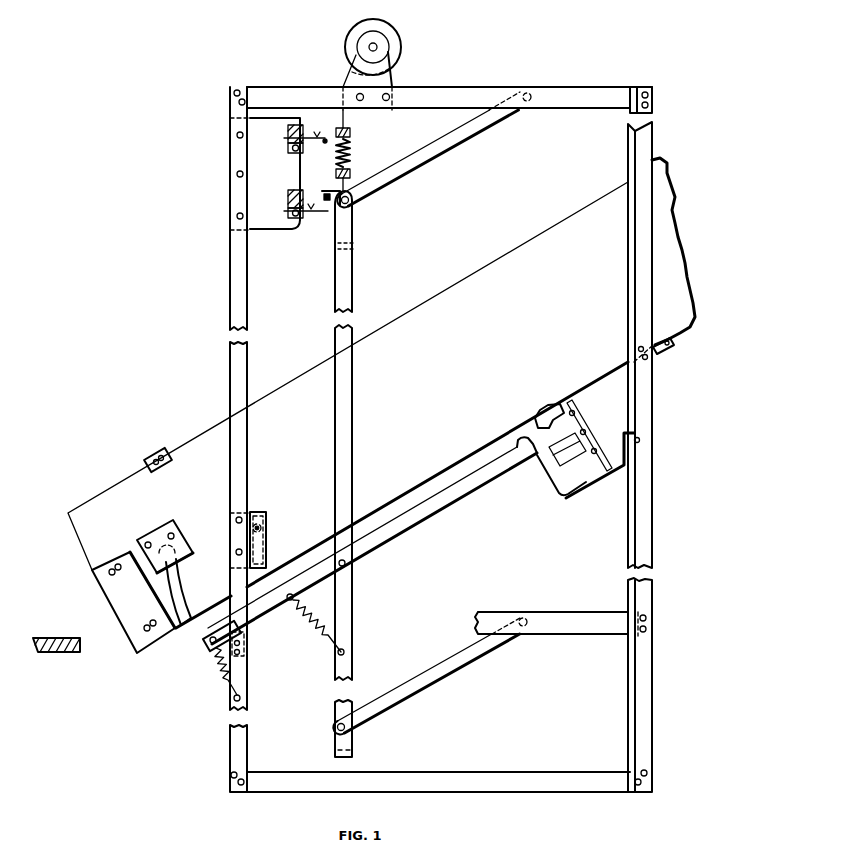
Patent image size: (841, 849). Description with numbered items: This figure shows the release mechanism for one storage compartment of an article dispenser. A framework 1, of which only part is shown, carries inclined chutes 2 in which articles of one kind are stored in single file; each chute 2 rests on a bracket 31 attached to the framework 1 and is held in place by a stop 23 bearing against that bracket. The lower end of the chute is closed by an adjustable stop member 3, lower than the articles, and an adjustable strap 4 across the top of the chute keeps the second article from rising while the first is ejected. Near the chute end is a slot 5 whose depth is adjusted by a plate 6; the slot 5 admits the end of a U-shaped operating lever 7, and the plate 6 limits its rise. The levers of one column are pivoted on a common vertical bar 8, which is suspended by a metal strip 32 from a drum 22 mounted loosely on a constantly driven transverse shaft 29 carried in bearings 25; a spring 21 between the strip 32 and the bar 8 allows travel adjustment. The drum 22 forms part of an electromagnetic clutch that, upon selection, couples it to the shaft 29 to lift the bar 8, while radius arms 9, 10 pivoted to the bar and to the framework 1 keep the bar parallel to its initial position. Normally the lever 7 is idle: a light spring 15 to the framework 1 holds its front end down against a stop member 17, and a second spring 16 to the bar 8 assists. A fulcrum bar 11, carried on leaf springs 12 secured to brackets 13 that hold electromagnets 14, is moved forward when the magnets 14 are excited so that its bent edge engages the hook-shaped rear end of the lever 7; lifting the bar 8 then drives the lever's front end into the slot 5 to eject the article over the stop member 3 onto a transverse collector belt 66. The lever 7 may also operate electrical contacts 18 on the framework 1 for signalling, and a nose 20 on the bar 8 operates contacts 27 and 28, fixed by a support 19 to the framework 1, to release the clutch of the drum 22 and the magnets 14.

The framework 1 is at (245, 317).
The chute 2 is at (383, 328).
The adjustable stop member 3 is at (130, 625).
The adjustable strap 4 is at (157, 456).
The slot 5 is at (191, 612).
The plate 6 is at (156, 540).
The operating lever 7 is at (394, 534).
The vertical bar 8 is at (350, 397).
The radius arm 9 is at (448, 140).
The radius arm 10 is at (414, 688).
The fulcrum bar 11 is at (549, 414).
The leaf spring 12 is at (577, 421).
The bracket 13 is at (596, 478).
The electromagnet 14 is at (557, 480).
The spring 15 is at (225, 680).
The second spring 16 is at (325, 636).
The stop member 17 is at (245, 640).
The electrical contacts 18 is at (265, 518).
The support 19 is at (257, 227).
The nose 20 is at (332, 192).
The spring 21 is at (350, 149).
The drum 22 is at (396, 44).
The stop 23 is at (669, 351).
The bearing 25 is at (386, 78).
The contact 27 is at (317, 208).
The contact 28 is at (328, 137).
The transverse shaft 29 is at (383, 50).
The bracket 31 is at (650, 357).
The metal strip 32 is at (347, 72).
The transverse collector belt 66 is at (53, 652).